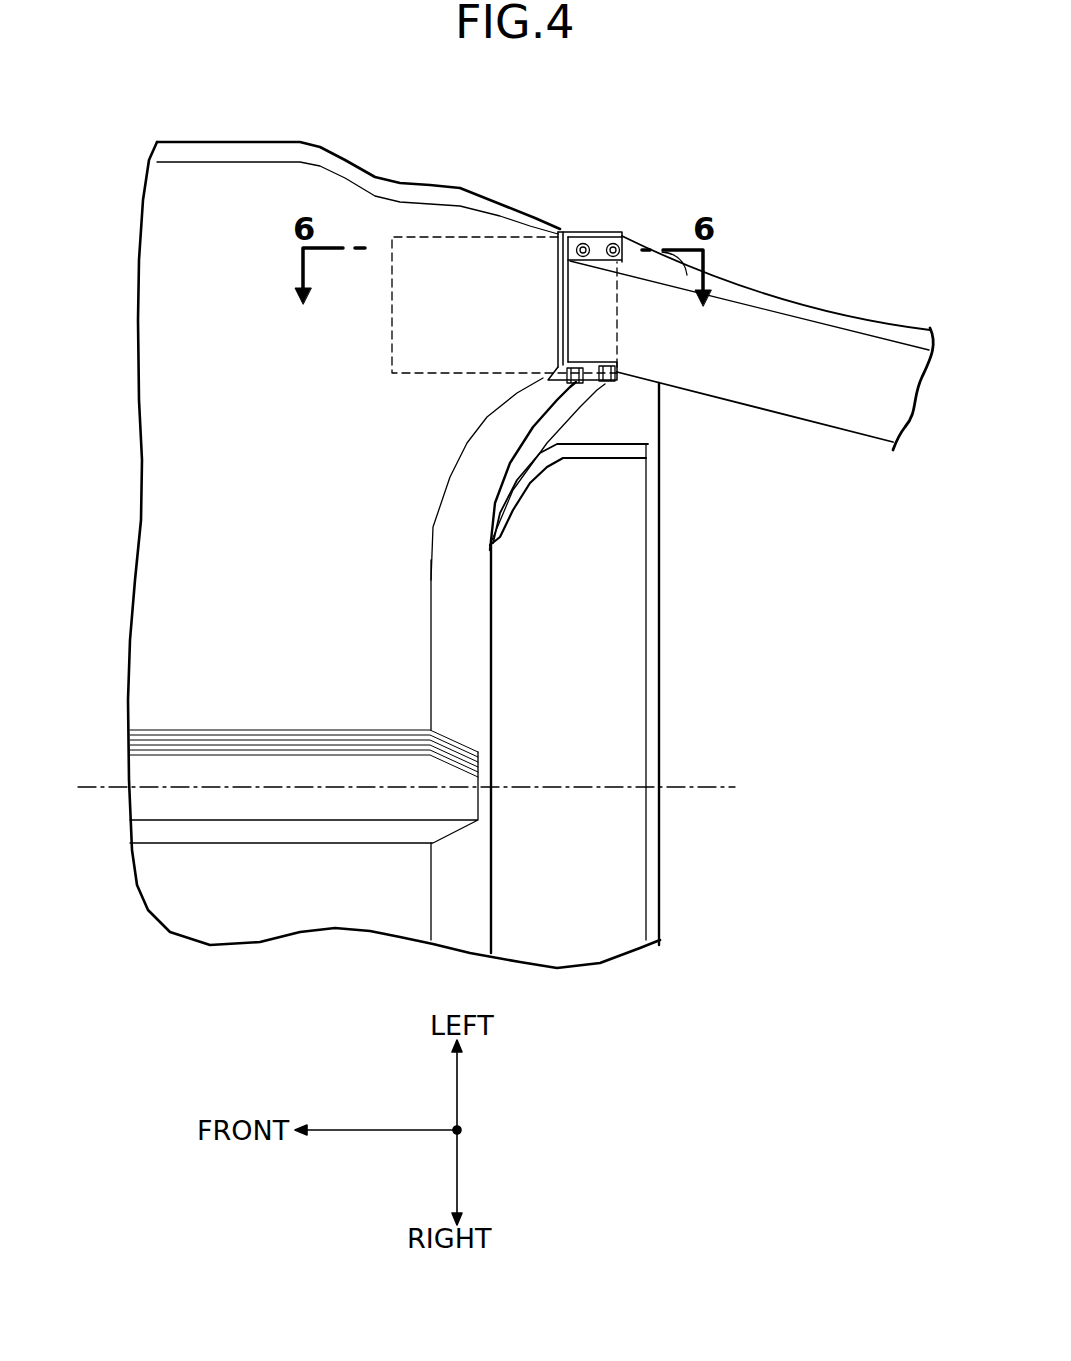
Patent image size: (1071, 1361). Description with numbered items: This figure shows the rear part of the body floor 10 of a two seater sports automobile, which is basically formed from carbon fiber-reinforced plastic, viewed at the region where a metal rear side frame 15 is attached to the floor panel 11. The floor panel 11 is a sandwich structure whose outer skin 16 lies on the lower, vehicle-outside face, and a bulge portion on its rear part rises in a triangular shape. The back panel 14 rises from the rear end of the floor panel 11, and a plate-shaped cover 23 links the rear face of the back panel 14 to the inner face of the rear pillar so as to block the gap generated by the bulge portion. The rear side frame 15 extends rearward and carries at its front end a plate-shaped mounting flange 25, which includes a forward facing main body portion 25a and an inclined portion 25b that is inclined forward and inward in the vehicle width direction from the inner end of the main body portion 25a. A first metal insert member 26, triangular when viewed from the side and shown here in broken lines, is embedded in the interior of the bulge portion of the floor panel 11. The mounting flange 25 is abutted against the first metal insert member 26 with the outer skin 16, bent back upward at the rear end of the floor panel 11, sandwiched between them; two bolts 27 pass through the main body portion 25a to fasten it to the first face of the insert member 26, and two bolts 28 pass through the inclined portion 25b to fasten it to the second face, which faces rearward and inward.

The body floor 10 is at (116, 221).
The floor panel 11 is at (136, 362).
The back panel 14 is at (628, 700).
The rear side frame 15 is at (800, 337).
The outer skin 16 is at (162, 531).
The cover 23 is at (633, 418).
The mounting flange 25 is at (537, 287).
The main body portion 25a is at (563, 245).
The inclined portion 25b is at (548, 379).
The first metal insert member 26 is at (459, 236).
The bolt 27 is at (614, 243).
The bolt 28 is at (607, 385).